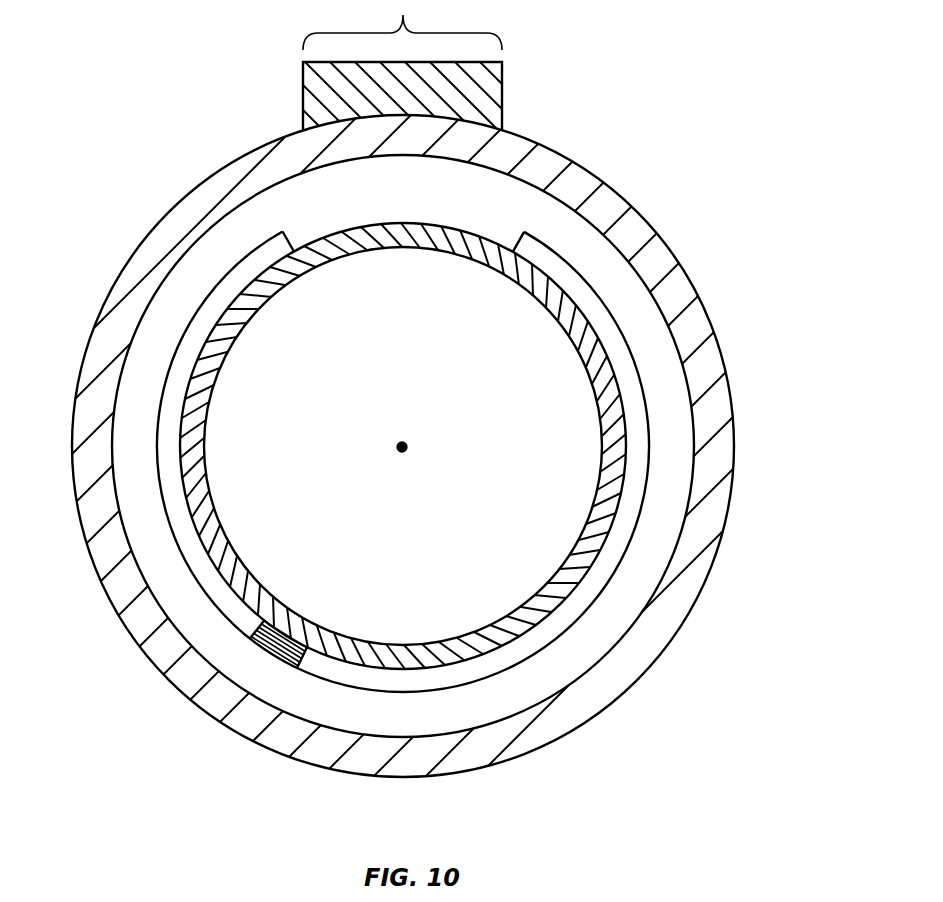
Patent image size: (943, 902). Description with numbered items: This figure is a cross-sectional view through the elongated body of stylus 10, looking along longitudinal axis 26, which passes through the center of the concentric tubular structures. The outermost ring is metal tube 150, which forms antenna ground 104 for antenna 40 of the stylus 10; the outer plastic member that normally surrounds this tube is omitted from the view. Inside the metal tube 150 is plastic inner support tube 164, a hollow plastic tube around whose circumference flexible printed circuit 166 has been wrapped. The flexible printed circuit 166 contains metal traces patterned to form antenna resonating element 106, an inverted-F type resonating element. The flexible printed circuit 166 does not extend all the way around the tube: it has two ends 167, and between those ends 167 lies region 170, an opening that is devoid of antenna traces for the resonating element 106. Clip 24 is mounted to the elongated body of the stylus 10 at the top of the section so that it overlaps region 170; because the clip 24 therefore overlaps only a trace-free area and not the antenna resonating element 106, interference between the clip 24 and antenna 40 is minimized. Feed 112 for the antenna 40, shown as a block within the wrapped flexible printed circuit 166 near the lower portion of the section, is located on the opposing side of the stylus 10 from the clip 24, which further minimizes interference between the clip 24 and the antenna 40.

The stylus 10 is at (442, 420).
The clip 24 is at (503, 93).
The longitudinal axis 26 is at (409, 447).
The antenna 40 is at (403, 470).
The antenna ground 104 is at (403, 470).
The antenna resonating element 106 is at (417, 697).
The feed path 112 is at (268, 662).
The metal tube 150 is at (403, 470).
The plastic inner support tube 164 is at (454, 432).
The flexible printed circuit 166 is at (403, 473).
The ends 167 is at (271, 247).
The region 170 is at (520, 223).